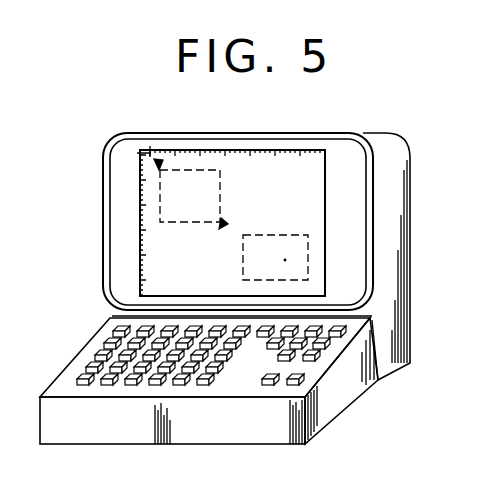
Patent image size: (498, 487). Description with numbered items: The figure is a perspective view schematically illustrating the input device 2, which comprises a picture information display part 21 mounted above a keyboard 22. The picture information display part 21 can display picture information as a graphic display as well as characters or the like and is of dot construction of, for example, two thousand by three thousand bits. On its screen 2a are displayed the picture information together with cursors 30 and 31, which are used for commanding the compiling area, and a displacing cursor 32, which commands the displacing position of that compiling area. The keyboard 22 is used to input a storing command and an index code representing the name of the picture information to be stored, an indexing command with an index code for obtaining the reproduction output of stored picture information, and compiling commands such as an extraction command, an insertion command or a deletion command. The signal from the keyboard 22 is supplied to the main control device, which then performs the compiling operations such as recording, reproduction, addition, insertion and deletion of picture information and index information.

The input device 2 is at (409, 269).
The screen 2a is at (345, 140).
The picture information display part 21 is at (103, 214).
The keyboard 22 is at (84, 349).
The cursor 30 is at (158, 164).
The cursor 31 is at (223, 224).
The displacing cursor 32 is at (244, 231).